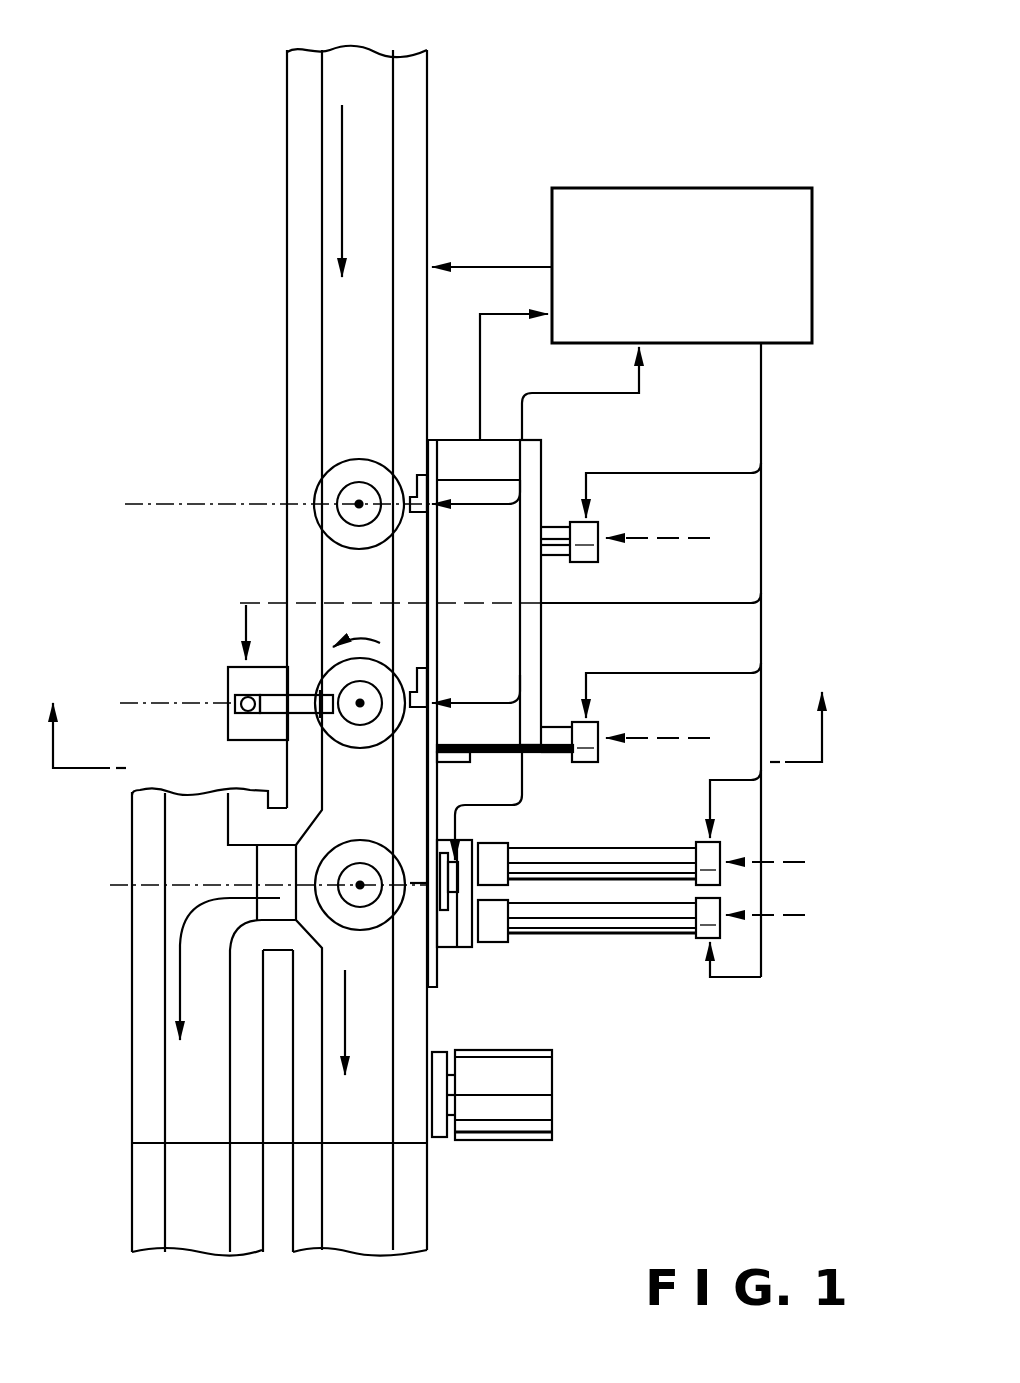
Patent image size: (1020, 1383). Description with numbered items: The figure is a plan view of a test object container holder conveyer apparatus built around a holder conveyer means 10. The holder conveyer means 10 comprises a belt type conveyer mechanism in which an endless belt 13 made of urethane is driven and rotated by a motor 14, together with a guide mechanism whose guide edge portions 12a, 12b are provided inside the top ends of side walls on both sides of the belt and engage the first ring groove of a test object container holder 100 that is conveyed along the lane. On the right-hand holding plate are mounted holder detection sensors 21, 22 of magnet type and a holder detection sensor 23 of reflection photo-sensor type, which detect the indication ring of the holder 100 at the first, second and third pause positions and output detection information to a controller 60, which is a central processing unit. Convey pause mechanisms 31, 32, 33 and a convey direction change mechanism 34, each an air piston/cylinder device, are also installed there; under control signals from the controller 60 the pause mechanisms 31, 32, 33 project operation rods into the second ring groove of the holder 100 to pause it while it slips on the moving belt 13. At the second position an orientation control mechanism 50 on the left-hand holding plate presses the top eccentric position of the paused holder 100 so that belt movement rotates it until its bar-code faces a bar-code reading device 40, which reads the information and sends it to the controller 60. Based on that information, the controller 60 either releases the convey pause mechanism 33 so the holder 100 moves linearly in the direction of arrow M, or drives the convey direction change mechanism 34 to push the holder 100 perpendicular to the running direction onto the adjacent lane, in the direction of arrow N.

The holder conveyer means 10 is at (264, 370).
The guide edge portion 12a is at (290, 166).
The guide edge portion 12b is at (412, 160).
The endless belt 13 is at (353, 58).
The motor 14 is at (552, 1080).
The holder detection sensor 21 is at (428, 508).
The holder detection sensor 22 is at (432, 696).
The holder detection sensor 23 is at (422, 890).
The convey pause mechanism 31 is at (600, 558).
The convey pause mechanism 32 is at (583, 762).
The convey pause mechanism 33 is at (638, 932).
The convey direction change mechanism 34 is at (650, 848).
The bar-code reading device 40 is at (545, 632).
The orientation control mechanism 50 is at (228, 670).
The controller 60 is at (660, 188).
The test object container holder 100 is at (355, 458).